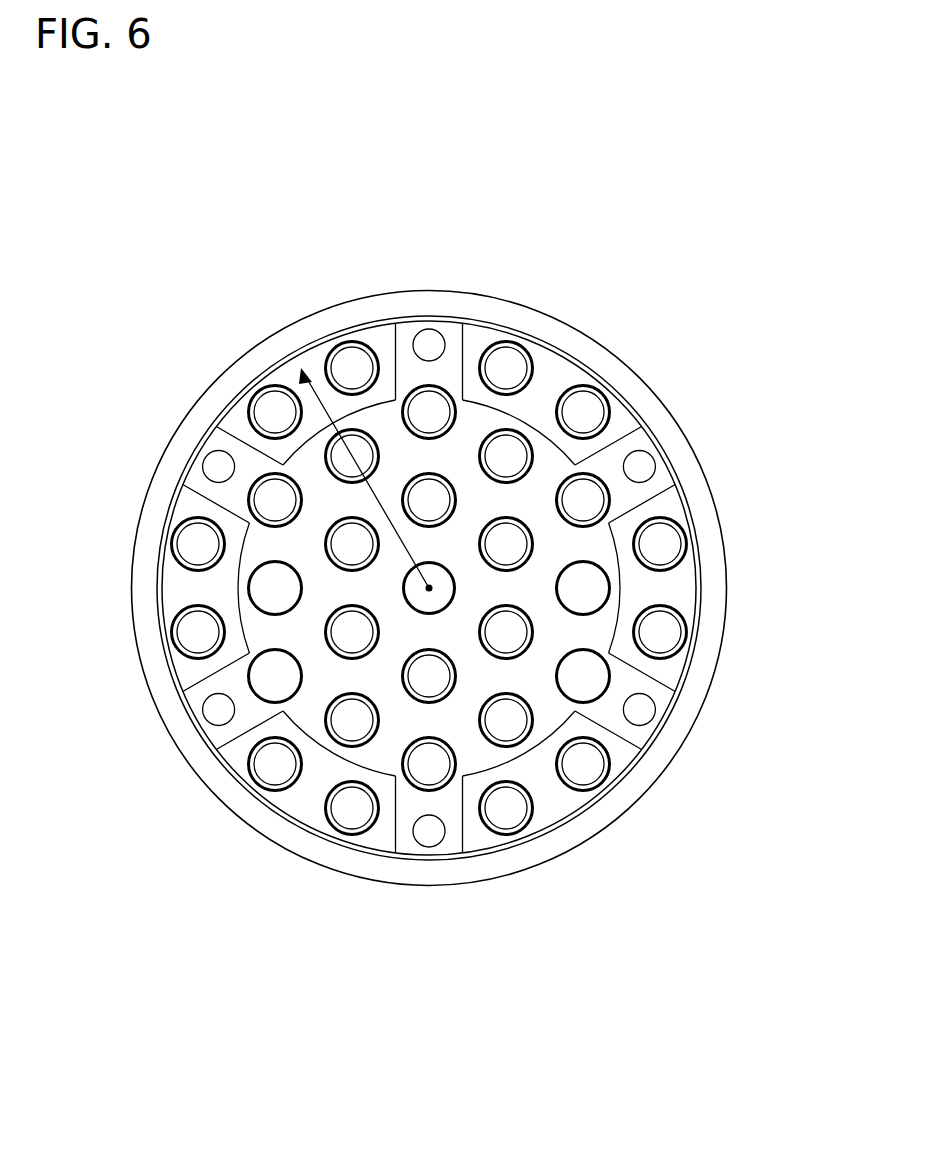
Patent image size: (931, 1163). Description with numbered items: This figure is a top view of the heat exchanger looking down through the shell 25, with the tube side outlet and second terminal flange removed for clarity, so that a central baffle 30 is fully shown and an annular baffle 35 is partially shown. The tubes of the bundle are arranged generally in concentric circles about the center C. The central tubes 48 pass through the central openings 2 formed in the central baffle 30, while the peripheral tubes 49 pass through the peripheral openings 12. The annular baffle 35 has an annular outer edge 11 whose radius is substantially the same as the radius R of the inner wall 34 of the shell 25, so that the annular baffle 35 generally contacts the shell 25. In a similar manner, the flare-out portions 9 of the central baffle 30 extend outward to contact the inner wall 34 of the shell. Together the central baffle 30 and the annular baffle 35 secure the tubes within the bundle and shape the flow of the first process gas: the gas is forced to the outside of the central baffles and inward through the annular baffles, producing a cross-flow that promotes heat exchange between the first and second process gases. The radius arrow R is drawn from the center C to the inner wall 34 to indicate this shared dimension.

The central openings 2 is at (612, 512).
The flare-out portions 9 is at (215, 442).
The annular outer edge 11 is at (313, 342).
The peripheral openings 12 is at (607, 777).
The shell 25 is at (232, 390).
The central baffle 30 is at (560, 468).
The inner wall 34 is at (477, 323).
The annular baffle 35 is at (680, 583).
The central tubes 48 is at (546, 356).
The peripheral tubes 49 is at (172, 628).
The center C is at (429, 588).
The radius R is at (330, 413).